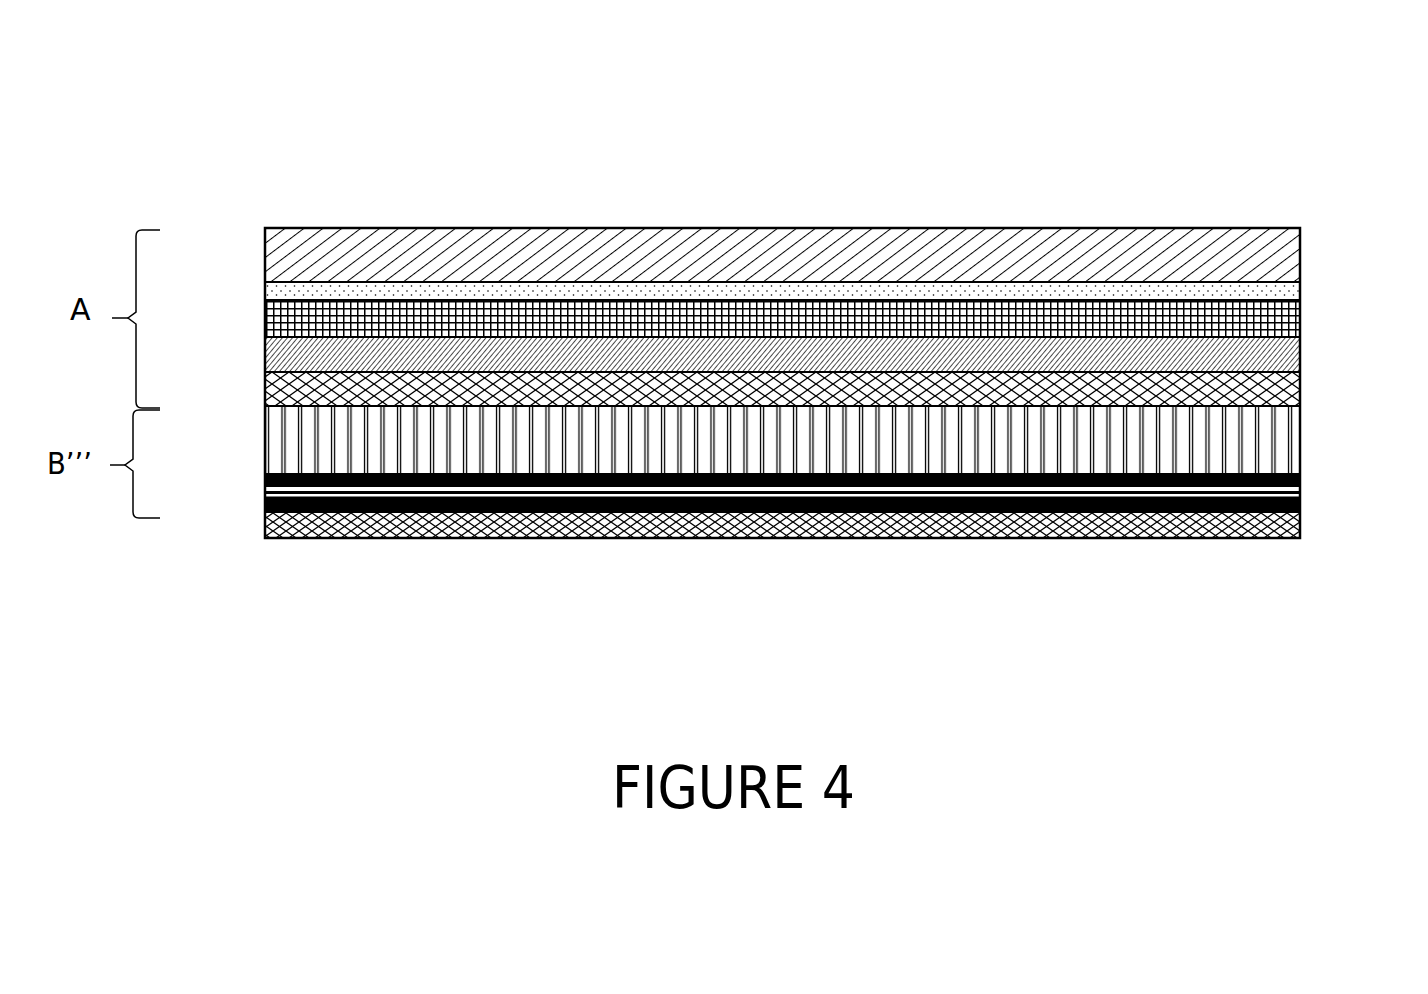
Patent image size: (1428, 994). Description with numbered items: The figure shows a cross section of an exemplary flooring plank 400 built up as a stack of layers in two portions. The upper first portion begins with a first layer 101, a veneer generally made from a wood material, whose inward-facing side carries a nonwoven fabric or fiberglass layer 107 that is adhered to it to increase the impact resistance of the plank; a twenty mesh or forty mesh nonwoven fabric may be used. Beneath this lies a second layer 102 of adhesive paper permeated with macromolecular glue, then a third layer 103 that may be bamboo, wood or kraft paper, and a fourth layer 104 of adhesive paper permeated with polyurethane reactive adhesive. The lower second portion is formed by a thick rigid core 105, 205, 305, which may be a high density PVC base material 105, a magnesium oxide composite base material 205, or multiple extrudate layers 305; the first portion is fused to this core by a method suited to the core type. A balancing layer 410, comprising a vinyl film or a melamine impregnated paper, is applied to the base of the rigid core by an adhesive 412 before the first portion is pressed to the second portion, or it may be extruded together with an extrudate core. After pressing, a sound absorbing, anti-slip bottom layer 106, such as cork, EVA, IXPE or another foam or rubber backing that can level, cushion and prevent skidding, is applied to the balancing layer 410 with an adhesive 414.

The plank 400 is at (774, 328).
The first layer 101 is at (1300, 242).
The nonwoven fabric or fiberglass layer 107 is at (266, 290).
The second layer 102 is at (266, 315).
The third layer 103 is at (1300, 352).
The fourth layer 104 is at (266, 378).
The rigid core 105 is at (1300, 456).
The rigid core 205 is at (826, 464).
The rigid core 305 is at (821, 485).
The adhesive 412 is at (268, 479).
The balancing layer 410 is at (268, 492).
The adhesive 414 is at (268, 505).
The bottom layer 106 is at (268, 522).